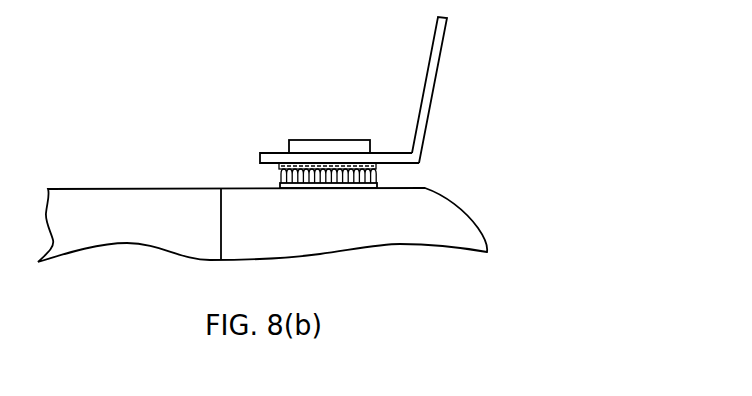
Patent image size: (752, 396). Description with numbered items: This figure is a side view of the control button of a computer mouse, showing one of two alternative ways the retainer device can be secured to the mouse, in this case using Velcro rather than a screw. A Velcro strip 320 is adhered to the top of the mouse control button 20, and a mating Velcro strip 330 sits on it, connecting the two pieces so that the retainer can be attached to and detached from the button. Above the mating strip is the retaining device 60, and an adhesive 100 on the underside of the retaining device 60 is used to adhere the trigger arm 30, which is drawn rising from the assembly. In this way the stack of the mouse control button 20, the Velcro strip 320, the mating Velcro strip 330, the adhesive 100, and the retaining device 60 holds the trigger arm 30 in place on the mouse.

The mouse control button 20 is at (487, 234).
The trigger arm 30 is at (441, 47).
The retaining device 60 is at (312, 140).
The adhesive 100 is at (264, 164).
The Velcro strip 320 is at (378, 180).
The mating Velcro strip 330 is at (280, 169).